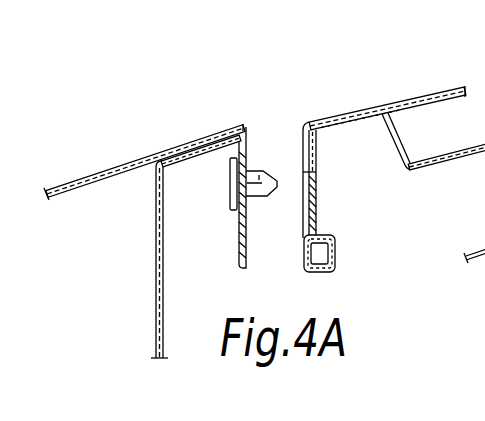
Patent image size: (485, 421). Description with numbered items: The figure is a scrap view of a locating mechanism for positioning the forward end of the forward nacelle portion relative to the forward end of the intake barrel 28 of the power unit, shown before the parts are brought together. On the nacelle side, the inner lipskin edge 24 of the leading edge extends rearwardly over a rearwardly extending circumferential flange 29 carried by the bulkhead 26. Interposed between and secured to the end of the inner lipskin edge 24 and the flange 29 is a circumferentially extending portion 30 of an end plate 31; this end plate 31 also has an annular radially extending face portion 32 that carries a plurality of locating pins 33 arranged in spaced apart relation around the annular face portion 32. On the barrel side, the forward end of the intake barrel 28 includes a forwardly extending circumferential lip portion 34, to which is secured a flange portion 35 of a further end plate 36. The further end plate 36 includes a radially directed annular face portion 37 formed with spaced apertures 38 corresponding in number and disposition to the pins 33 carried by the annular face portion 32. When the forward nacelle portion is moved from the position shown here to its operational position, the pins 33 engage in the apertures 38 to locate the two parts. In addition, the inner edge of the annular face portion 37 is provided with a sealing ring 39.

The inner lipskin edge 24 is at (123, 160).
The bulkhead 26 is at (157, 300).
The intake barrel 28 is at (432, 88).
The circumferential flange 29 is at (193, 165).
The circumferentially extending portion 30 is at (217, 132).
The end plate 31 is at (252, 130).
The annular radially extending face portion 32 is at (248, 261).
The locating pins 33 is at (267, 176).
The circumferential lip portion 34 is at (343, 136).
The flange portion 35 is at (358, 110).
The further end plate 36 is at (322, 117).
The radially directed annular face portion 37 is at (302, 202).
The apertures 38 is at (314, 190).
The sealing ring 39 is at (325, 254).